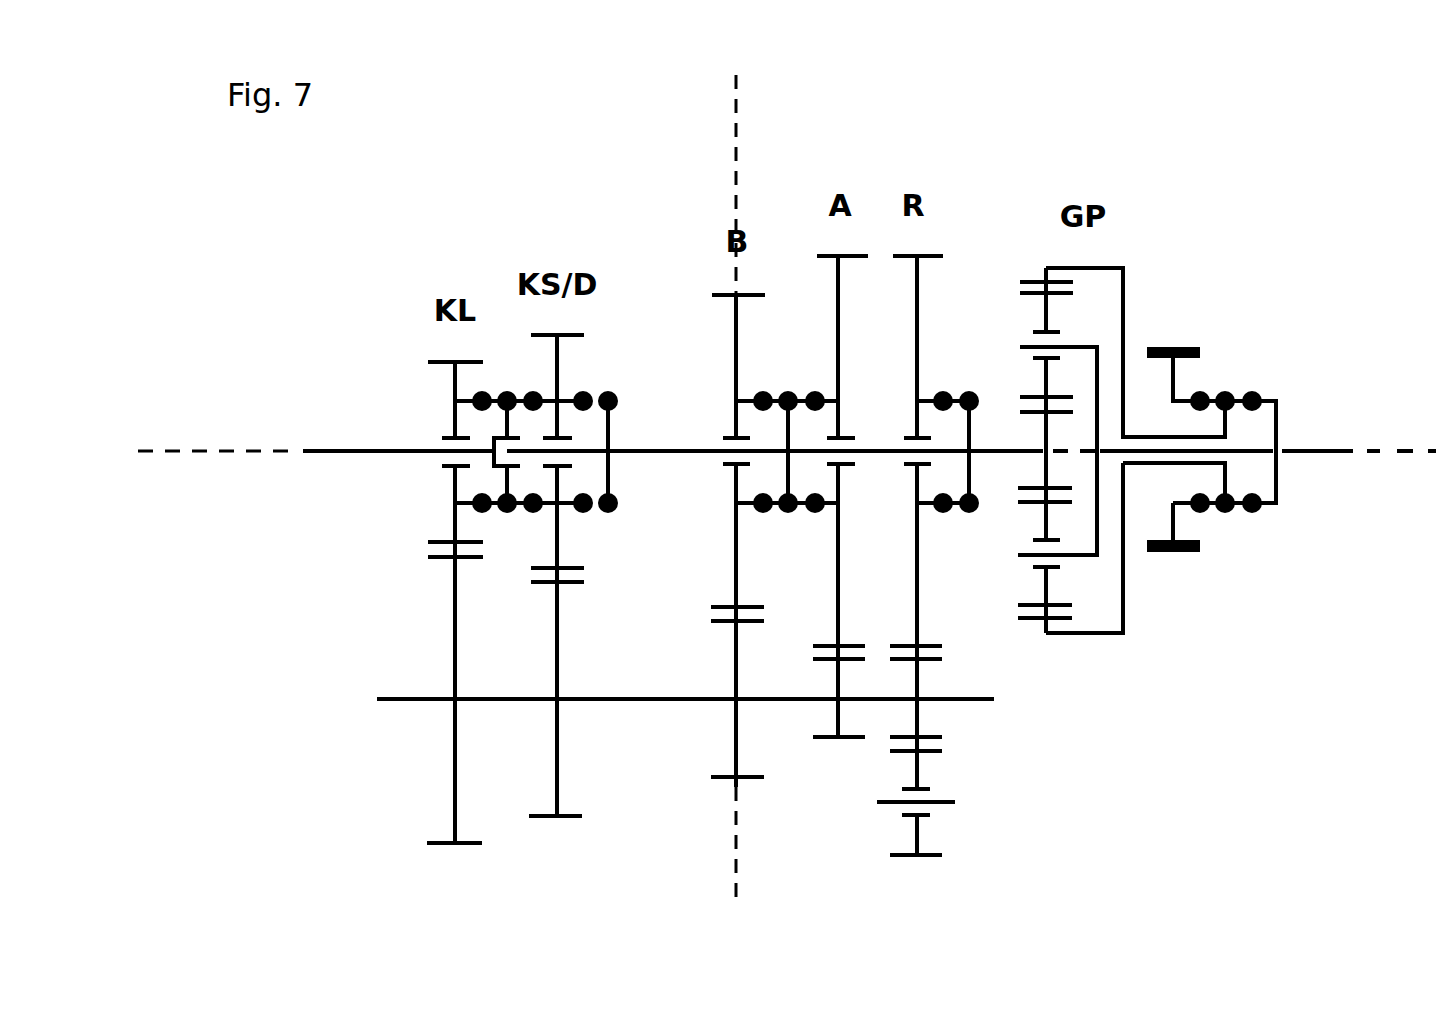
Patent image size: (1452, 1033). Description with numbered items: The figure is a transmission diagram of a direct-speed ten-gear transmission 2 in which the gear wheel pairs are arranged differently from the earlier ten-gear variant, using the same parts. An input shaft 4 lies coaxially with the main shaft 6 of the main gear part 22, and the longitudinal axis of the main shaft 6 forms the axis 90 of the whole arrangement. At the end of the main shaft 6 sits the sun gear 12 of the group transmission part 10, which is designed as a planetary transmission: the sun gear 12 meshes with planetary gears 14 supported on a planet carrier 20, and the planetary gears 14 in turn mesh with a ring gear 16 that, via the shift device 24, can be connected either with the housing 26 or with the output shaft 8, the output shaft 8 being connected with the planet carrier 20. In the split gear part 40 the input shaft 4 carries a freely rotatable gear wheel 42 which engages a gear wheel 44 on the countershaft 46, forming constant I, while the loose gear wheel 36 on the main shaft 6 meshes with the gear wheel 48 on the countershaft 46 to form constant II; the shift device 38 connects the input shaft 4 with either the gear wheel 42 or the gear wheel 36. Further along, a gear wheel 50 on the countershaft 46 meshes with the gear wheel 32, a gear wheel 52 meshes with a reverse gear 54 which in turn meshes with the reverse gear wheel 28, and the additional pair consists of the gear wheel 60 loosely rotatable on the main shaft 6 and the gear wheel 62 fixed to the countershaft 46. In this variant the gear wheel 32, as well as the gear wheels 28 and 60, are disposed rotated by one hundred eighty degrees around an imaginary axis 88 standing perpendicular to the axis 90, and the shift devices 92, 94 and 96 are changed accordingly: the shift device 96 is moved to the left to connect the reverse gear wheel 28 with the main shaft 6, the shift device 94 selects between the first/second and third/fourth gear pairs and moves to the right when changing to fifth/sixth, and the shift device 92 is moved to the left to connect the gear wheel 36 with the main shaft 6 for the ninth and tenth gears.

The transmission 2 is at (336, 338).
The input shaft 4 is at (350, 455).
The main shaft 6 is at (694, 443).
The output shaft 8 is at (1318, 453).
The group transmission part 10 is at (1078, 130).
The sun gear 12 is at (1048, 473).
The planetary gears 14 is at (1046, 318).
The ring gear 16 is at (1043, 633).
The planet carrier 20 is at (1098, 367).
The main gear part 22 is at (828, 120).
The shift device 24 is at (1227, 510).
The housing 26 is at (1177, 378).
The reverse gear wheel 28 is at (918, 312).
The gear wheel 32 is at (733, 348).
The gear wheel 36 is at (560, 355).
The shift device 38 is at (507, 503).
The split gear part 40 is at (508, 128).
The gear wheel 42 is at (458, 382).
The gear wheel 44 is at (450, 753).
The countershaft 46 is at (397, 704).
The gear wheel 48 is at (552, 764).
The gear wheel 50 is at (737, 750).
The gear wheel 52 is at (920, 685).
The reverse gear 54 is at (920, 772).
The gear wheel 60 is at (838, 312).
The gear wheel 62 is at (838, 740).
The imaginary axis 88 is at (735, 187).
The axis 90 is at (256, 442).
The shift device 92 is at (608, 503).
The shift device 94 is at (788, 503).
The shift device 96 is at (969, 503).